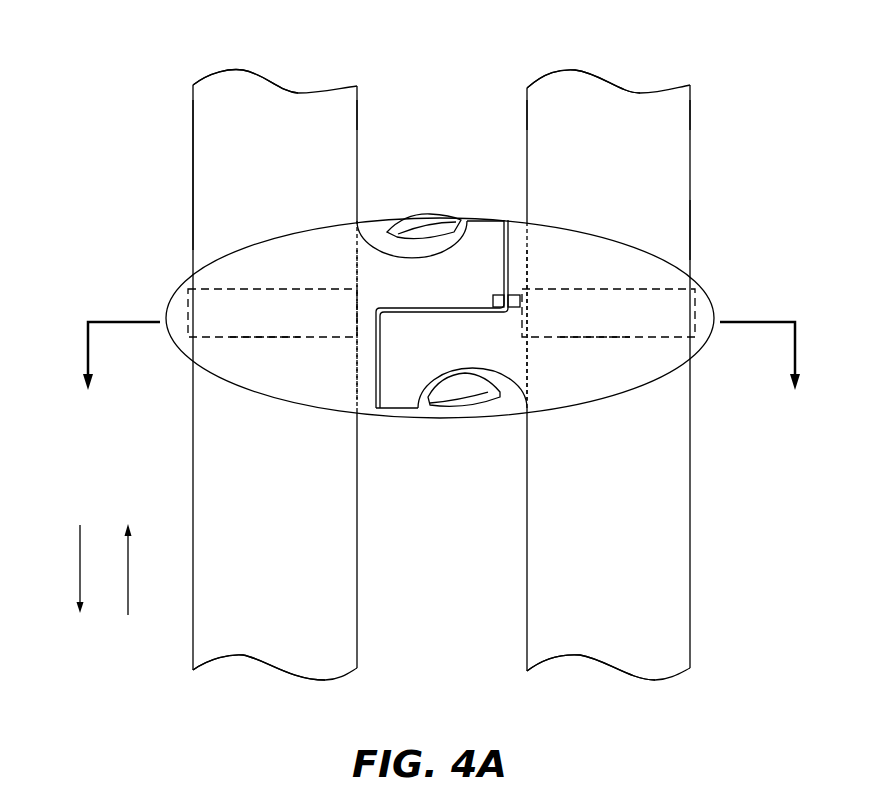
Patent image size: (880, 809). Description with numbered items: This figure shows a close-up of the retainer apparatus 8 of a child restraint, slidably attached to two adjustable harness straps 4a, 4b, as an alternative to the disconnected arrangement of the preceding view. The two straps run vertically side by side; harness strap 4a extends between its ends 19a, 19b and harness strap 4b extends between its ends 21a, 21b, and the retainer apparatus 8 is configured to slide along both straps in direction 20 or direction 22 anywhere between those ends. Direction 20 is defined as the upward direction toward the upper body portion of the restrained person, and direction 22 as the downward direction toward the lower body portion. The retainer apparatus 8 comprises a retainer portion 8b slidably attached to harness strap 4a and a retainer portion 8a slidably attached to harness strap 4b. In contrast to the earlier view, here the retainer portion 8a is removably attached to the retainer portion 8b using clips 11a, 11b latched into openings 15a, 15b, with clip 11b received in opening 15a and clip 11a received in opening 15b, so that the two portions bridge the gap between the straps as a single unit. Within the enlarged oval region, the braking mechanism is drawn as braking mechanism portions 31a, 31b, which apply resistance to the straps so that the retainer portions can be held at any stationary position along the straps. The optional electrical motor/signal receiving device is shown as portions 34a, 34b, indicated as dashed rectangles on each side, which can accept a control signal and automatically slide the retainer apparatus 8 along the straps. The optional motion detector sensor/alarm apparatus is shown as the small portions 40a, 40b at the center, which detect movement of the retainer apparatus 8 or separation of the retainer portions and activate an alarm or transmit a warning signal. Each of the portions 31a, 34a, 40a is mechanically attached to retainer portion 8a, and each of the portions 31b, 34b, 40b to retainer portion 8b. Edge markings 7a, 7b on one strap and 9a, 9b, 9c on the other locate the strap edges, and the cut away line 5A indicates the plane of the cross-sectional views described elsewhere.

The adjustable harness strap 4a is at (275, 375).
The adjustable harness strap 4b is at (608, 375).
The first edge of first strip 7a is at (193, 123).
The second edge of first strip 7b is at (357, 110).
The first edge of second strip 9a is at (527, 120).
The second edge of second strip 9b is at (690, 112).
The edge portion of second strip 9c is at (640, 205).
The retainer apparatus 8 is at (492, 195).
The retainer portion 8a is at (548, 325).
The retainer portion 8b is at (297, 325).
The clip 11a is at (457, 412).
The clip 11b is at (408, 220).
The opening 15a is at (371, 212).
The opening 15b is at (506, 408).
The end of harness strap 19a is at (298, 92).
The end of harness strap 19b is at (297, 668).
The end of harness strap 21a is at (640, 92).
The end of harness strap 21b is at (635, 670).
The direction 20 is at (78, 555).
The direction 22 is at (125, 555).
The braking mechanism portion 31a is at (262, 338).
The braking mechanism portion 31b is at (583, 342).
The electrical motor/signal receiving device portion 34a is at (258, 282).
The electrical motor/signal receiving device portion 34b is at (572, 282).
The motion detector sensor/alarm apparatus portion 40a is at (492, 303).
The motion detector sensor/alarm apparatus portion 40b is at (514, 312).
The cut away line 5A is at (436, 374).